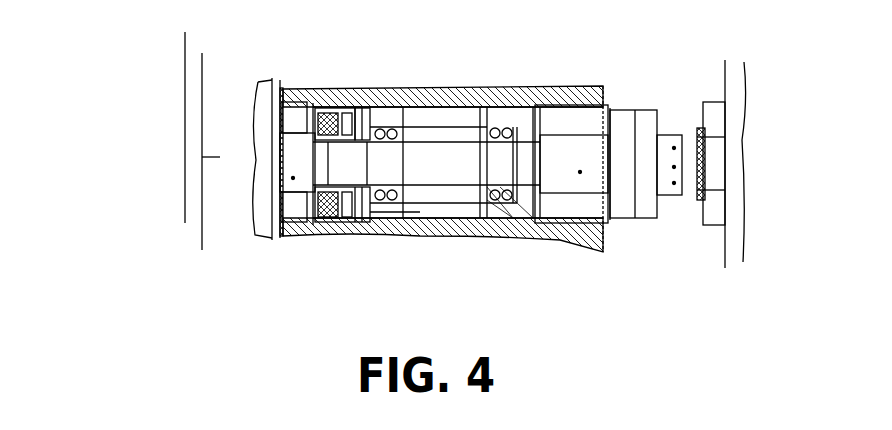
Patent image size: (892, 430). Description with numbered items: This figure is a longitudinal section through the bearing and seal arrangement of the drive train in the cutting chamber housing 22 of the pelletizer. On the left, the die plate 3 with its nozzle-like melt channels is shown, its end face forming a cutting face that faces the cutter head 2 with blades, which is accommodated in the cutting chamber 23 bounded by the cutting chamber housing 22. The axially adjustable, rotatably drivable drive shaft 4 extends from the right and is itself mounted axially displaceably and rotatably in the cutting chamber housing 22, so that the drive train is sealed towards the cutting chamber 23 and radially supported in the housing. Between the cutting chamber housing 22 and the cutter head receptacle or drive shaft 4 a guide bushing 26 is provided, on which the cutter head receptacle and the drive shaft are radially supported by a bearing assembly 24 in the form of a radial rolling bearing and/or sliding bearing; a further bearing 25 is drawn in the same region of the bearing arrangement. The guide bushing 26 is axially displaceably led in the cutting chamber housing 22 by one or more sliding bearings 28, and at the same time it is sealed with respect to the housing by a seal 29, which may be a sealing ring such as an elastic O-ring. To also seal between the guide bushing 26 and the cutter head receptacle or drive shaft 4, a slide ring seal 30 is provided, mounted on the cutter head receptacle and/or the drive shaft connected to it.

The cutter head 2 is at (207, 225).
The die plate 3 is at (185, 52).
The cutting chamber 23 is at (195, 276).
The cutting chamber housing 22 is at (527, 87).
The guide bushing 26 is at (458, 110).
The sliding bearing 28 is at (383, 108).
The seal 29 is at (362, 108).
The slide ring seal 30 is at (340, 110).
The bearing lower part 25 is at (343, 202).
The bearing assembly 24 is at (497, 202).
The drive shaft 4 is at (687, 155).